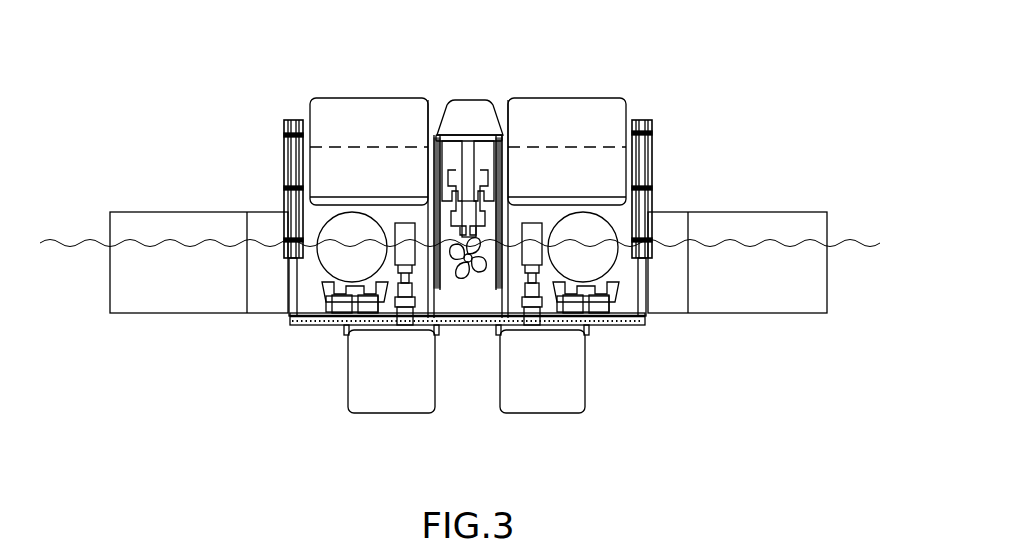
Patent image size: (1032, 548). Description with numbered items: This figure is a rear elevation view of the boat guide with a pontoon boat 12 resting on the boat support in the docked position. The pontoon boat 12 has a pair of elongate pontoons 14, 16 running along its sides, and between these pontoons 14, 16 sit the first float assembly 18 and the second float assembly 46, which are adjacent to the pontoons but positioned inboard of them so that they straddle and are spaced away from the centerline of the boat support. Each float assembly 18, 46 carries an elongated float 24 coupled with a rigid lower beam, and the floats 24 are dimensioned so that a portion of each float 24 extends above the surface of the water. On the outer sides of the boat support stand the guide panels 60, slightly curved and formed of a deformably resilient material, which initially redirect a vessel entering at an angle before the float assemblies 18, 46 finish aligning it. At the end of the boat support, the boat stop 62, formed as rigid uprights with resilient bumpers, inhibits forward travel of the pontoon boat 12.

The pontoon boat 12 is at (572, 88).
The pontoon 14 is at (332, 259).
The pontoon 16 is at (605, 261).
The first float assembly 18 is at (390, 284).
The float 24 is at (402, 222).
The second float assembly 46 is at (547, 284).
The guide panel 60 is at (650, 120).
The boat stop 62 is at (432, 128).